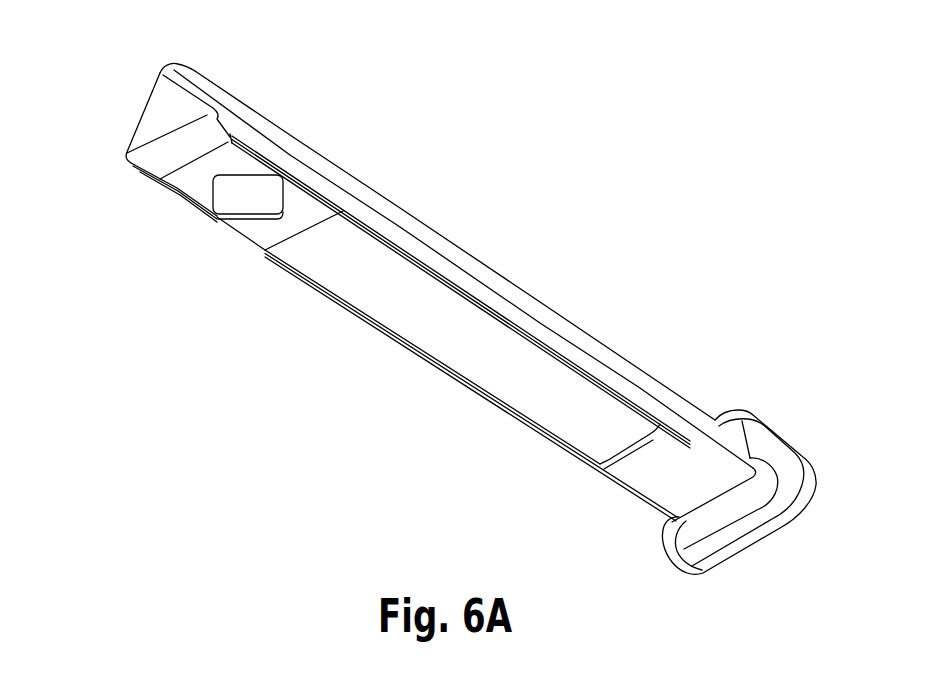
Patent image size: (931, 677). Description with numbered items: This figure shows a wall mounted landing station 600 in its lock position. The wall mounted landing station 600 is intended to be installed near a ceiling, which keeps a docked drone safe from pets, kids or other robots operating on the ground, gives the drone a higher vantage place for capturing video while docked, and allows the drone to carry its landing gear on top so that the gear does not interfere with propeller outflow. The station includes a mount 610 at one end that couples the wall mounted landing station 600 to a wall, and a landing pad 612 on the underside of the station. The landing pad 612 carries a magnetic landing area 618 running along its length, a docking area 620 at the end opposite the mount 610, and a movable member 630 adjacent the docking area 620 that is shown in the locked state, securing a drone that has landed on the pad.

The wall mounted landing station 600 is at (137, 52).
The mount 610 is at (741, 408).
The landing pad 612 is at (343, 270).
The magnetic landing area 618 is at (381, 328).
The docking area 620 is at (178, 194).
The movable member 630 is at (232, 233).